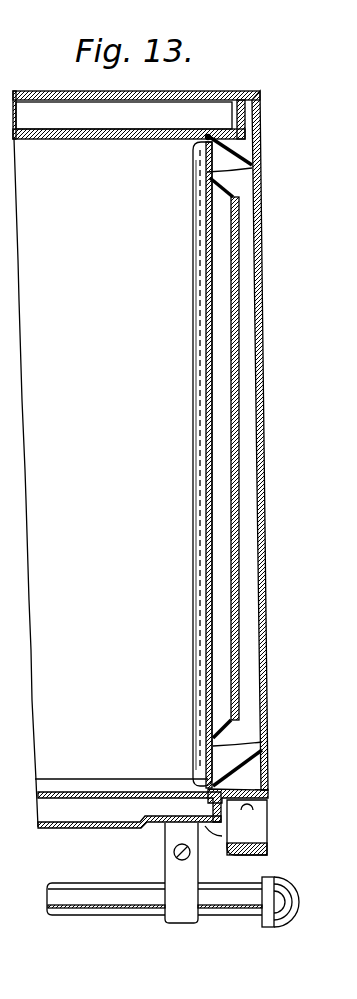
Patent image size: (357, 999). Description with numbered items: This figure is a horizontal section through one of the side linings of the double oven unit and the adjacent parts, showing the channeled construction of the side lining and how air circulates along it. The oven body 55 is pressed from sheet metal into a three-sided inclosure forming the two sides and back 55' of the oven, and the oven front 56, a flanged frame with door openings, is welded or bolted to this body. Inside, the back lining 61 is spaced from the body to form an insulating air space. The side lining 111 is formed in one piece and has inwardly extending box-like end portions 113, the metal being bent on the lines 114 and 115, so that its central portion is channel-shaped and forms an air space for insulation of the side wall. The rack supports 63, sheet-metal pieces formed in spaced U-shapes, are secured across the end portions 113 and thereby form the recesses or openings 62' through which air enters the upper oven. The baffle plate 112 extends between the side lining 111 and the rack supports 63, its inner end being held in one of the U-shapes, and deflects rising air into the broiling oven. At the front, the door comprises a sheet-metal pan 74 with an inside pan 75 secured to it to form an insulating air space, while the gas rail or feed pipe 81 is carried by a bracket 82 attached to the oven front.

The oven body 55 is at (164, 447).
The back of the oven 55' is at (129, 101).
The back lining 61 is at (95, 139).
The rectangular recess 62' is at (145, 465).
The rack supports 63 is at (206, 628).
The sheet-metal pan 74 is at (103, 830).
The inside pan 75 is at (82, 793).
The gas rail or feed pipe 81 is at (118, 907).
The brackets or supports 82 is at (188, 872).
The oven front 56 is at (268, 803).
The side linings 111 is at (237, 395).
The baffle plates 112 is at (222, 526).
The box-like end portions 113 is at (255, 170).
The bend line 114 is at (213, 180).
The bend line 115 is at (233, 199).